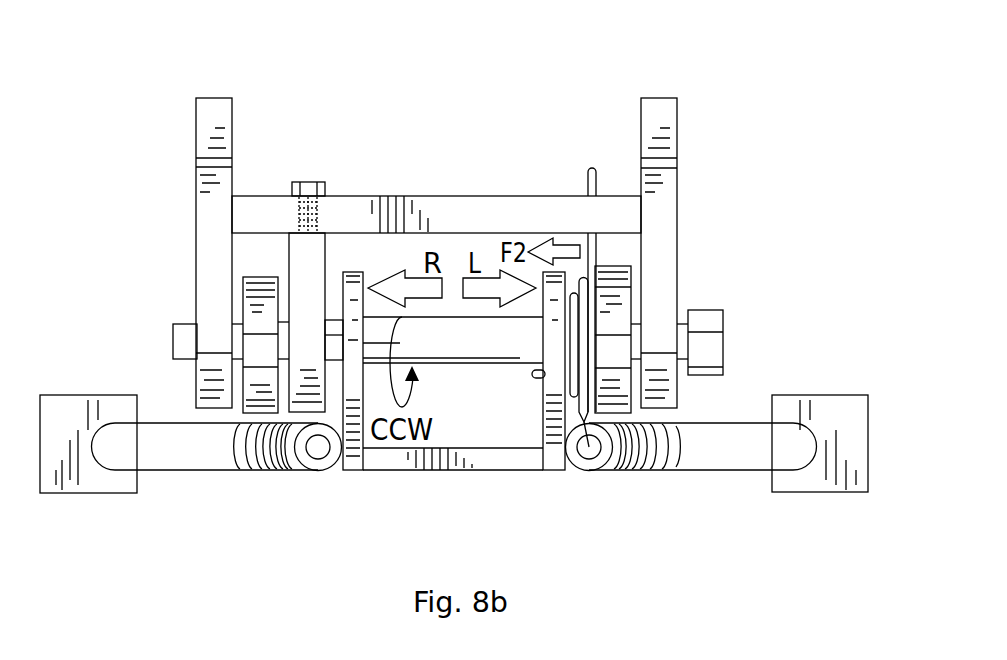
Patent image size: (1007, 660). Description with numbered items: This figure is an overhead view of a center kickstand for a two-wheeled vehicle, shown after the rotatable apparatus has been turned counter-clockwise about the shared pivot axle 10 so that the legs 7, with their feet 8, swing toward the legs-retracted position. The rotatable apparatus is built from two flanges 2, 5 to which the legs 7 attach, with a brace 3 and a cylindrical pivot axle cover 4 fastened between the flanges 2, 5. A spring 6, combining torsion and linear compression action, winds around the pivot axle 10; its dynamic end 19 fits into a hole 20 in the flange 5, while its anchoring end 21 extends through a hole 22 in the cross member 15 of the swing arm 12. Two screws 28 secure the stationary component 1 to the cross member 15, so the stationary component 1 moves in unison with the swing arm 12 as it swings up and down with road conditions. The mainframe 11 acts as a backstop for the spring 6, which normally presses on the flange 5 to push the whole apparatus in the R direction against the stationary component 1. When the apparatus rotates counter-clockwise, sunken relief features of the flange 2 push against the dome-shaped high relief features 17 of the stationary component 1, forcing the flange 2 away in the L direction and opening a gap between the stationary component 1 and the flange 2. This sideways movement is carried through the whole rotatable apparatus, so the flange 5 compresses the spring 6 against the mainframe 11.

The stationary component 1 is at (303, 266).
The flange 2 is at (355, 472).
The brace 3 is at (493, 470).
The pivot axle cover 4 is at (465, 340).
The flange 5 is at (552, 472).
The spring 6 is at (598, 458).
The legs 7 is at (198, 466).
The feet 8 is at (82, 493).
The pivot axle 10 is at (715, 350).
The mainframe 11 is at (260, 276).
The swing arm 12 is at (222, 106).
The cross member 15 is at (438, 208).
The high relief features 17 is at (338, 330).
The dynamic end 19 is at (532, 374).
The hole 20 is at (543, 398).
The anchoring end 21 is at (591, 167).
The hole 22 is at (558, 196).
The screws 28 is at (306, 182).